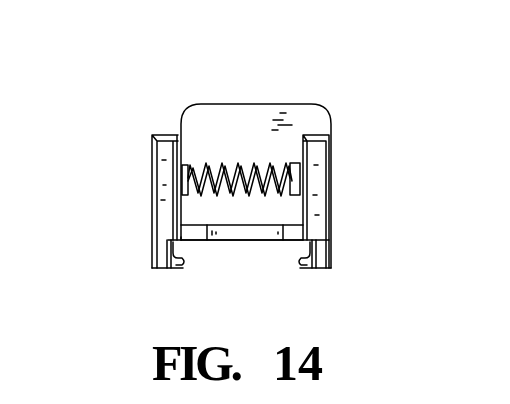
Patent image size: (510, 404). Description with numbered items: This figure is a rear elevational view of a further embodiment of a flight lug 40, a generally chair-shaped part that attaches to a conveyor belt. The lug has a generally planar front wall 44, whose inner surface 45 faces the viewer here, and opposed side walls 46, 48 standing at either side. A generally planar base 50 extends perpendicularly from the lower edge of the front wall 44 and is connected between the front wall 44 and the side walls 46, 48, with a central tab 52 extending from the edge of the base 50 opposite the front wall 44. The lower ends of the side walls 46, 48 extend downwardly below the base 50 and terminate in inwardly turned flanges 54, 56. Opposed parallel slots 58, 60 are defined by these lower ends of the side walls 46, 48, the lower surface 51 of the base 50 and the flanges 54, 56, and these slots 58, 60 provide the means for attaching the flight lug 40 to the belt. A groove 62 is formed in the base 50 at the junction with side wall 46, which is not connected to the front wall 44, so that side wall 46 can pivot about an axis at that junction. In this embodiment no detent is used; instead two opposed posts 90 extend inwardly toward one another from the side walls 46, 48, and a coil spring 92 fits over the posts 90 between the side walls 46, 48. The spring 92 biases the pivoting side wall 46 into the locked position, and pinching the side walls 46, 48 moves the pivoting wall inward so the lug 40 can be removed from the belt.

The flight lug 40 is at (342, 92).
The front wall 44 is at (225, 102).
The inner surface of the front wall 45 is at (290, 112).
The side wall 46 is at (160, 195).
The side wall 48 is at (317, 193).
The base 50 is at (275, 219).
The lower surface of the base 51 is at (223, 242).
The central tab 52 is at (248, 242).
The flange 54 is at (180, 262).
The flange 56 is at (302, 267).
The slot 58 is at (307, 248).
The slot 60 is at (176, 248).
The groove 62 is at (184, 236).
The post 90 is at (198, 164).
The coil spring 92 is at (250, 162).